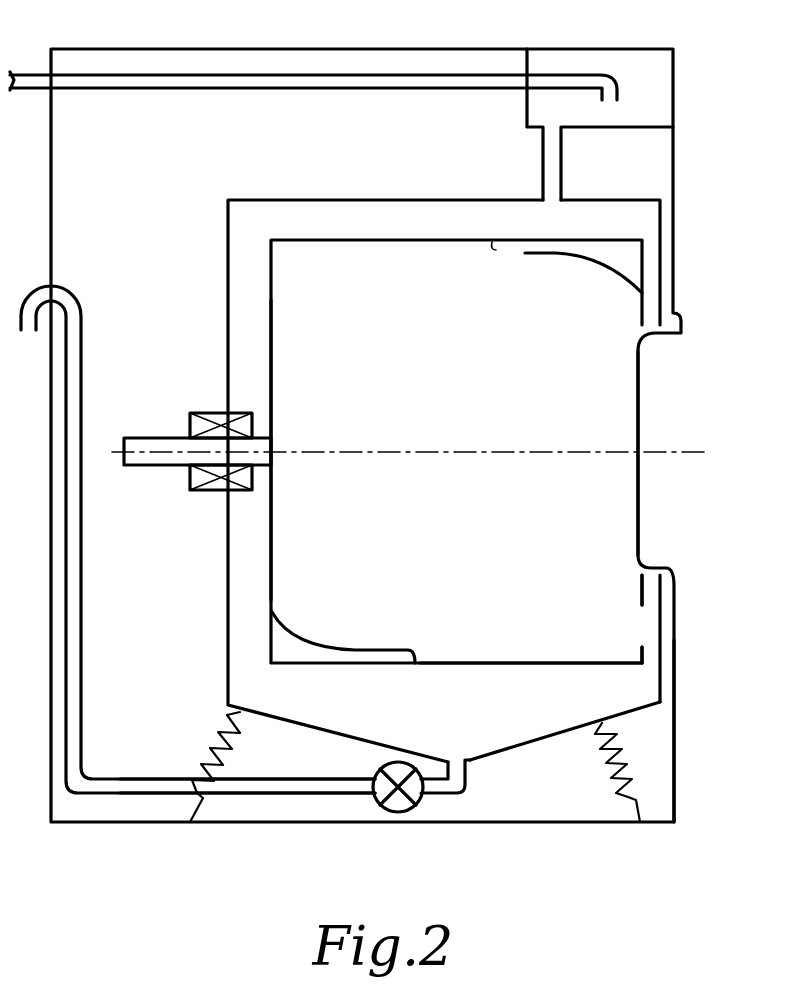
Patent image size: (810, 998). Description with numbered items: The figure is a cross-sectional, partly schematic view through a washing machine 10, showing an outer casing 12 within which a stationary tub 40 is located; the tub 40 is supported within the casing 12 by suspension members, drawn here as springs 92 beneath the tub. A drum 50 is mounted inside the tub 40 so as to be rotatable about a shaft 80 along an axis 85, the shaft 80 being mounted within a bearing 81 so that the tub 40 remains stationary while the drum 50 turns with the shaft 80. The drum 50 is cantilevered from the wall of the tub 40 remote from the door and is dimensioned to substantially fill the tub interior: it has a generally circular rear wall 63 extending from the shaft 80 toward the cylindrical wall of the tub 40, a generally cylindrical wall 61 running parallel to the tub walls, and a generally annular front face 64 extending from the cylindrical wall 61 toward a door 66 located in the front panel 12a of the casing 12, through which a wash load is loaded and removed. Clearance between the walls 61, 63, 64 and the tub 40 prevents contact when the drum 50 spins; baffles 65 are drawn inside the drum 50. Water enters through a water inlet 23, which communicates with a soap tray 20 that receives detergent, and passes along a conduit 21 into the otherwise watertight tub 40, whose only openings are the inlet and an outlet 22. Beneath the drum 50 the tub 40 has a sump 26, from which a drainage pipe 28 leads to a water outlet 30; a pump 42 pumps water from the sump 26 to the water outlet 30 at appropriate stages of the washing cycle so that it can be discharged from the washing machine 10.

The washing machine 10 is at (692, 249).
The outer casing 12 is at (51, 155).
The front panel 12a is at (680, 705).
The soap tray 20 is at (652, 96).
The conduit 21 is at (552, 164).
The outlet 22 is at (452, 755).
The water inlet 23 is at (144, 78).
The sump 26 is at (537, 720).
The drainage pipe 28 is at (283, 786).
The water outlet 30 is at (37, 297).
The tub 40 is at (265, 198).
The pump 42 is at (397, 806).
The drum 50 is at (405, 238).
The cylindrical wall 61 is at (480, 660).
The rear wall 63 is at (272, 368).
The front face 64 is at (609, 619).
The baffle 65 is at (578, 253).
The door 66 is at (641, 517).
The shaft 80 is at (147, 438).
The bearing 81 is at (197, 478).
The axis 85 is at (428, 452).
The spring 92 is at (215, 742).